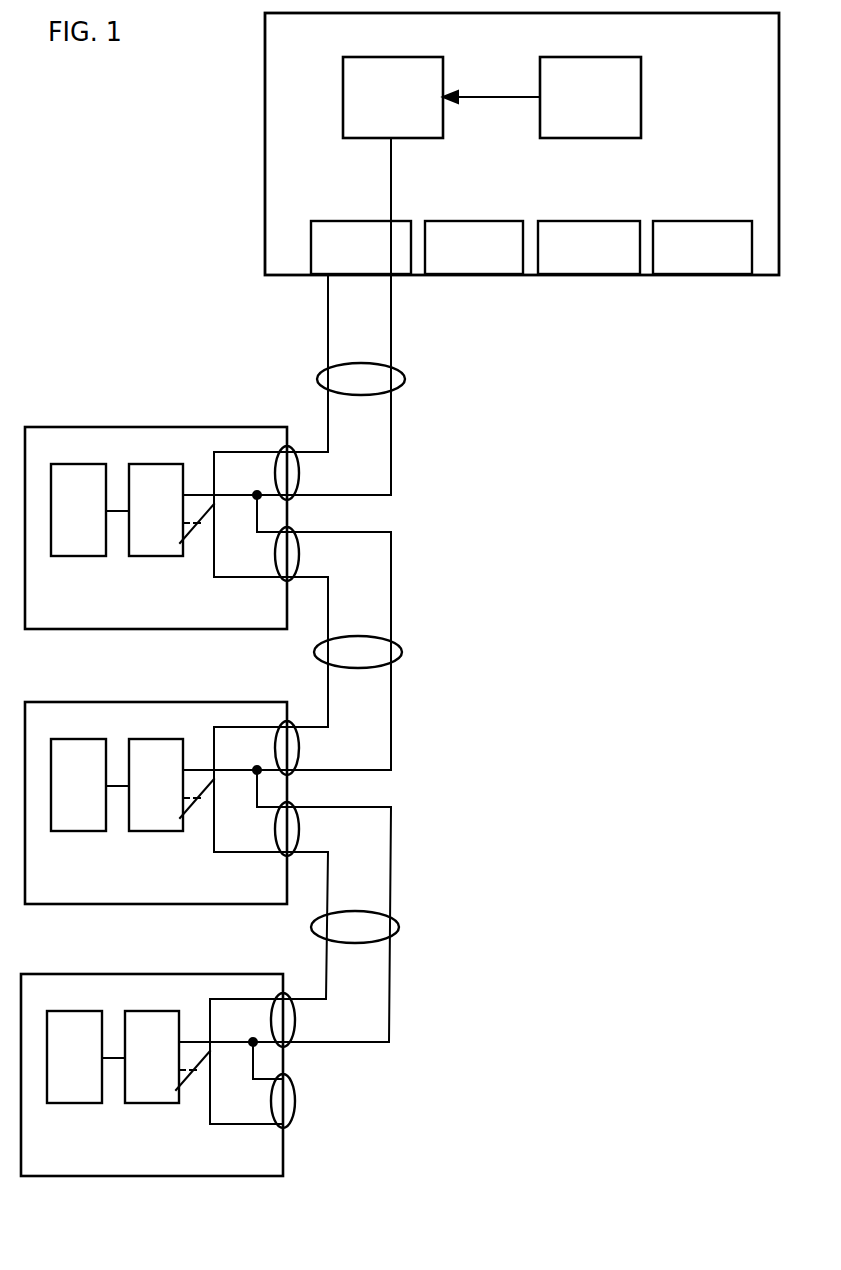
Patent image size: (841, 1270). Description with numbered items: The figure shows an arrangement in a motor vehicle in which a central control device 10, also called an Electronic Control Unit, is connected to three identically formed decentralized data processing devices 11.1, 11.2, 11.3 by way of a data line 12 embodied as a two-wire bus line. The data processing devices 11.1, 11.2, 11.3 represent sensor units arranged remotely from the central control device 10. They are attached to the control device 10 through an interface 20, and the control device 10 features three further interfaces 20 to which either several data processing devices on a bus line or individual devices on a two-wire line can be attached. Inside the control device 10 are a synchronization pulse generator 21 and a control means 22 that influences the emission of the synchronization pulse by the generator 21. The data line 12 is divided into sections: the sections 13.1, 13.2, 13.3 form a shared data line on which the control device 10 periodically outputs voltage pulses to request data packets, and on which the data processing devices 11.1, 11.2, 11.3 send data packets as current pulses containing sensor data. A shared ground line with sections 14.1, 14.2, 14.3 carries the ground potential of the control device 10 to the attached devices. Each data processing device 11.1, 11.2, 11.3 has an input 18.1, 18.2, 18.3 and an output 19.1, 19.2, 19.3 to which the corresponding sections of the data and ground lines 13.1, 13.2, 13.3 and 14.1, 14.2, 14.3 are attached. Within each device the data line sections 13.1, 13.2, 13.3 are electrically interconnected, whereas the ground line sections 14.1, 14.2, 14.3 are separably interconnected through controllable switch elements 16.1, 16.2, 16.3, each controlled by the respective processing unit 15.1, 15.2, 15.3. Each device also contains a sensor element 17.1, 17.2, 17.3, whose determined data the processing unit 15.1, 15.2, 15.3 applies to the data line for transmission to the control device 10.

The central control device 10 is at (265, 146).
The synchronization pulse generator 21 is at (343, 100).
The control means 22 is at (641, 98).
The interface 20 is at (362, 221).
The data line 12 is at (406, 380).
The data line section 13.1 is at (392, 330).
The data line section 13.2 is at (392, 587).
The data line section 13.3 is at (390, 862).
The ground line section 14.1 is at (327, 336).
The ground line section 14.2 is at (325, 688).
The ground line section 14.3 is at (323, 961).
The decentralized data processing device 11.1 is at (155, 427).
The decentralized data processing device 11.2 is at (156, 773).
The decentralized data processing device 11.3 is at (152, 1045).
The processing unit 15.1 is at (155, 557).
The processing unit 15.2 is at (157, 815).
The processing unit 15.3 is at (153, 1087).
The controllable switch element 16.1 is at (204, 521).
The controllable switch element 16.2 is at (233, 789).
The controllable switch element 16.3 is at (229, 1061).
The sensor element 17.1 is at (78, 557).
The sensor element 17.2 is at (80, 815).
The sensor element 17.3 is at (76, 1087).
The input 18.1 is at (300, 477).
The input 18.2 is at (297, 748).
The input 18.3 is at (293, 1020).
The output 19.1 is at (300, 557).
The output 19.2 is at (327, 829).
The output 19.3 is at (323, 1101).